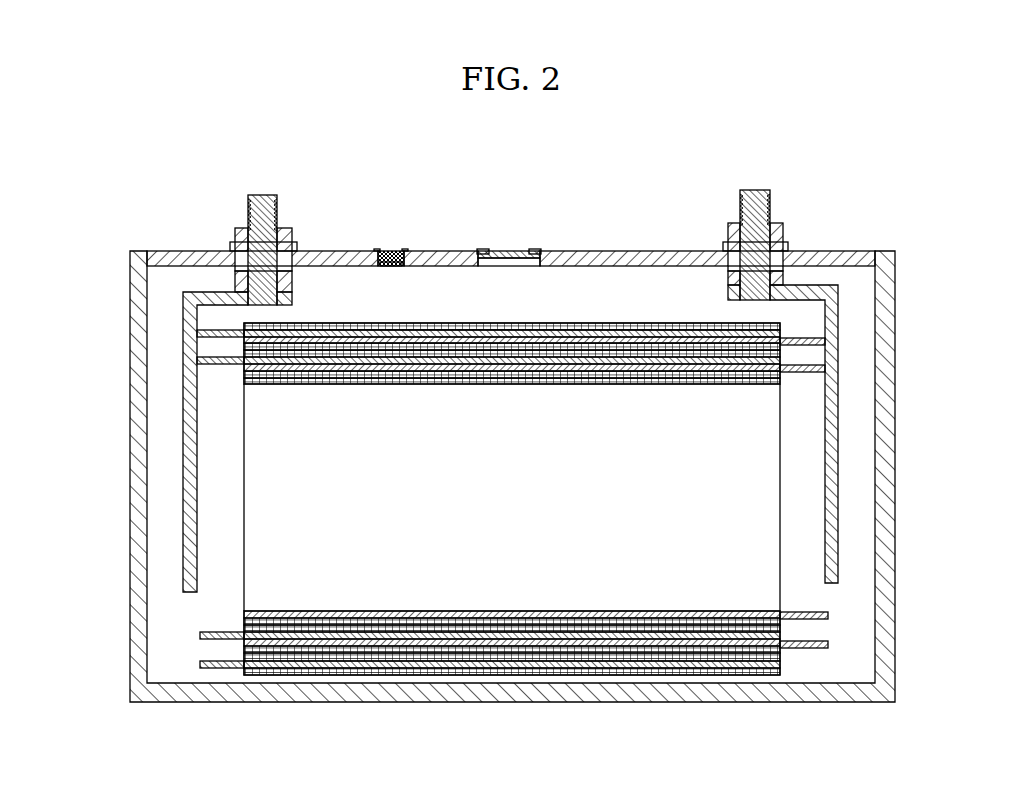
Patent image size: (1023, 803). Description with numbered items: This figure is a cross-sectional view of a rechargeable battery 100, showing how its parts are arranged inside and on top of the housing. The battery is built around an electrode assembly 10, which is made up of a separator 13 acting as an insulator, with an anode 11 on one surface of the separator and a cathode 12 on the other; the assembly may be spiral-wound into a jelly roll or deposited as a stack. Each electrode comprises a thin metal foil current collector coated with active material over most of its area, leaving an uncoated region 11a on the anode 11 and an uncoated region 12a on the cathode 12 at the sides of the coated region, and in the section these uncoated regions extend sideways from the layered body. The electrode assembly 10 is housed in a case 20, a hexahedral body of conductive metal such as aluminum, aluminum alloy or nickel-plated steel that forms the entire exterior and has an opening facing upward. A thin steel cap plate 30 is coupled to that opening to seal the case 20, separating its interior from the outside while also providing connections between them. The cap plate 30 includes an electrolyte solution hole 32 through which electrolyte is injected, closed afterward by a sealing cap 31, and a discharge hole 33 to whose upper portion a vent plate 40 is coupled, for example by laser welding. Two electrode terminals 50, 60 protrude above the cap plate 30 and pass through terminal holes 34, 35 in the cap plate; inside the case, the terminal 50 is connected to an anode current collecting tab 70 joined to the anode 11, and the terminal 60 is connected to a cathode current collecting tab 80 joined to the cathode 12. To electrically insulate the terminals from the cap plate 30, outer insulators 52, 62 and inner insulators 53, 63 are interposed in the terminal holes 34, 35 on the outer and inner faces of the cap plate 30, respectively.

The rechargeable battery 100 is at (498, 146).
The electrode assembly 10 is at (603, 574).
The anode 11 is at (330, 668).
The uncoated region 11a is at (213, 670).
The cathode 12 is at (690, 650).
The uncoated region 12a is at (818, 650).
The separator 13 is at (518, 640).
The case 20 is at (897, 404).
The cap plate 30 is at (613, 247).
The sealing cap 31 is at (393, 250).
The electrolyte solution hole 32 is at (390, 268).
The discharge hole 33 is at (520, 262).
The terminal hole 34 is at (292, 280).
The terminal hole 35 is at (725, 277).
The vent plate 40 is at (505, 250).
The electrode terminal 50 is at (262, 195).
The outer insulator 52 is at (233, 247).
The inner insulator 53 is at (235, 258).
The electrode terminal 60 is at (755, 190).
The outer insulator 62 is at (790, 246).
The inner insulator 63 is at (733, 258).
The anode current collecting tab 70 is at (184, 469).
The cathode current collecting tab 80 is at (842, 462).